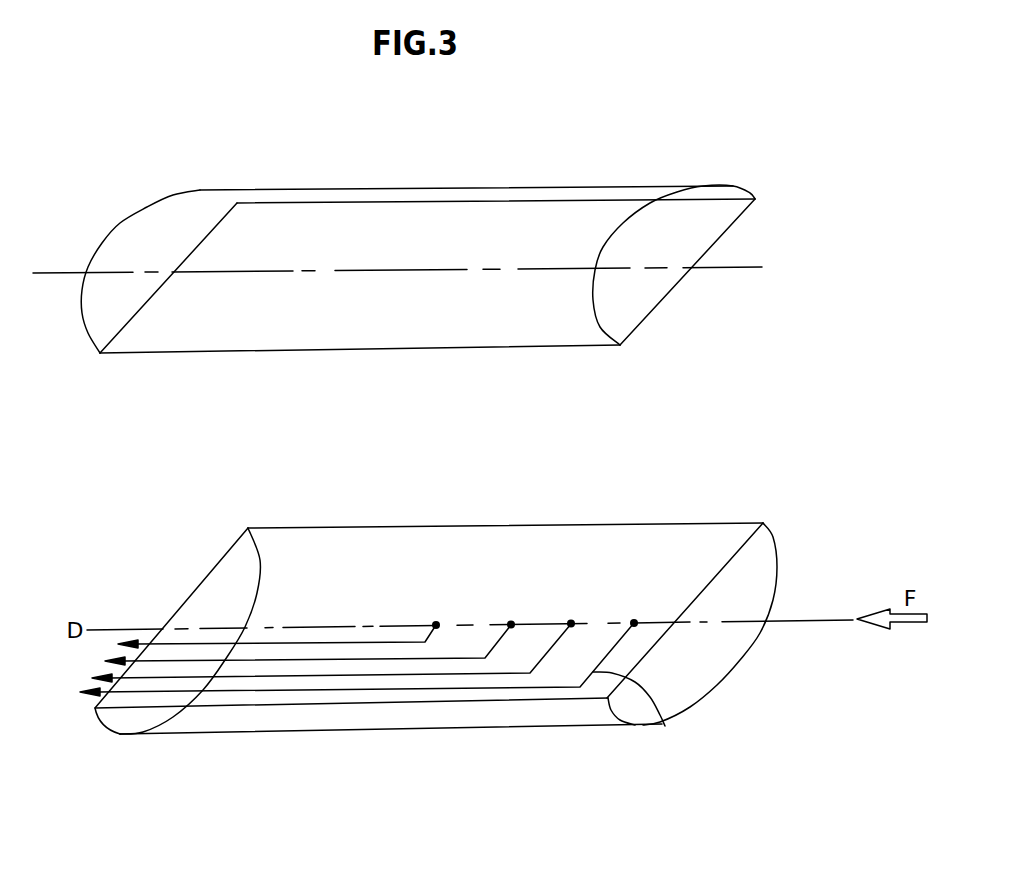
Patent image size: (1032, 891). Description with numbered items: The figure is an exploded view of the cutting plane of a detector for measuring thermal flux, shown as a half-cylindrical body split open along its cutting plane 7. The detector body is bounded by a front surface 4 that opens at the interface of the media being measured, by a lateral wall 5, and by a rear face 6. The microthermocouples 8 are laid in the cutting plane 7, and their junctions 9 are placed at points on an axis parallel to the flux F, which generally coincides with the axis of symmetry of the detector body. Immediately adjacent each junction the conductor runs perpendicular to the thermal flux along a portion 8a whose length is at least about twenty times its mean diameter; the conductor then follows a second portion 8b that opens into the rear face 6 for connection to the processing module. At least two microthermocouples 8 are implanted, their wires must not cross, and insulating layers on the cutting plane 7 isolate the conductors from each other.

The front surface 4 is at (708, 222).
The lateral wall 5 is at (477, 186).
The rear face 6 is at (100, 243).
The cutting plane 7 is at (723, 547).
The microthermocouples 8 is at (477, 673).
The portion of conductor perpendicular to the thermal flux 8a is at (665, 726).
The second portion of conductor 8b is at (345, 690).
The junctions 9 is at (637, 624).